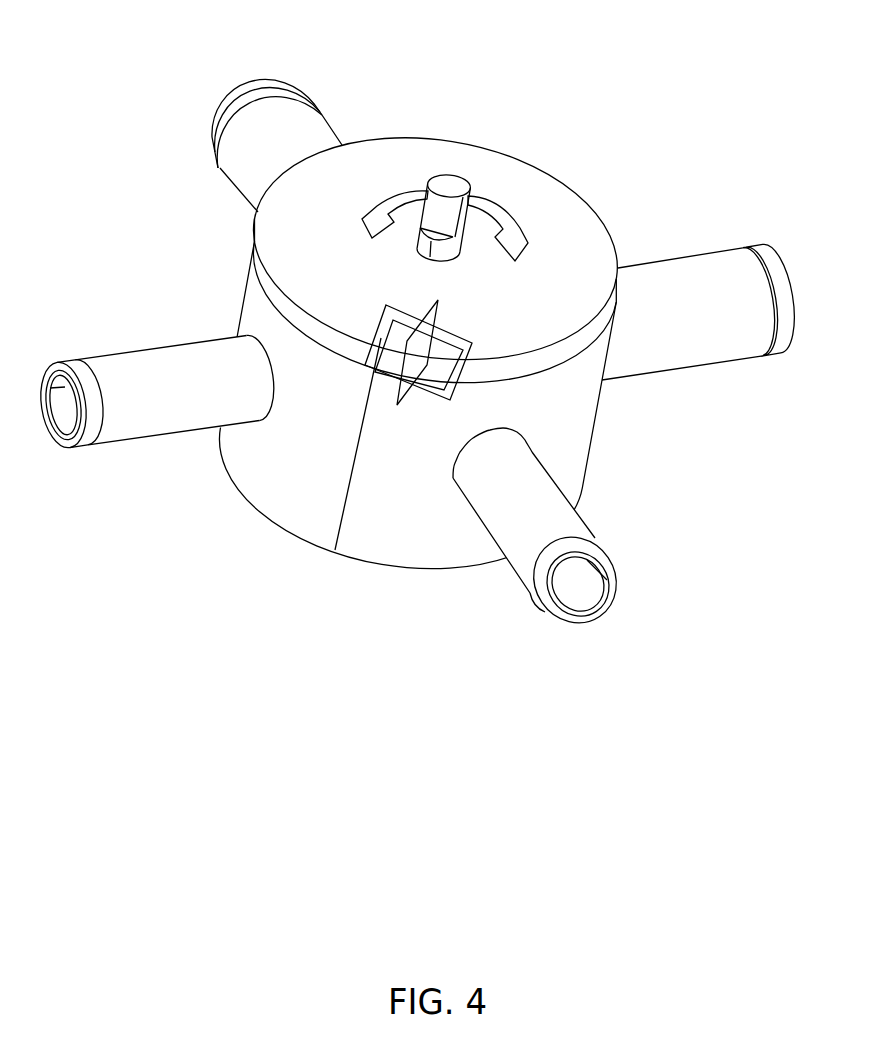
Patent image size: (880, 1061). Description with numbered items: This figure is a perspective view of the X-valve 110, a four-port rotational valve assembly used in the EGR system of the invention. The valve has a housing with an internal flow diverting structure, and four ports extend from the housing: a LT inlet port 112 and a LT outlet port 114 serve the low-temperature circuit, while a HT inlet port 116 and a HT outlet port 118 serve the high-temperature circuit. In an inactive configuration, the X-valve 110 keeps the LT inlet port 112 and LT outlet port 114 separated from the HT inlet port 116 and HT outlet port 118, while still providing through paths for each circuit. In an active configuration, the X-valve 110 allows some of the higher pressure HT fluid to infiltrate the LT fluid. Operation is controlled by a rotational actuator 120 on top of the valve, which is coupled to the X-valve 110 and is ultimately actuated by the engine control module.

The X-valve 110 is at (432, 327).
The LT inlet port 112 is at (777, 263).
The LT outlet port 114 is at (275, 81).
The HT inlet port 116 is at (78, 372).
The HT outlet port 118 is at (594, 552).
The rotational actuator 120 is at (452, 183).